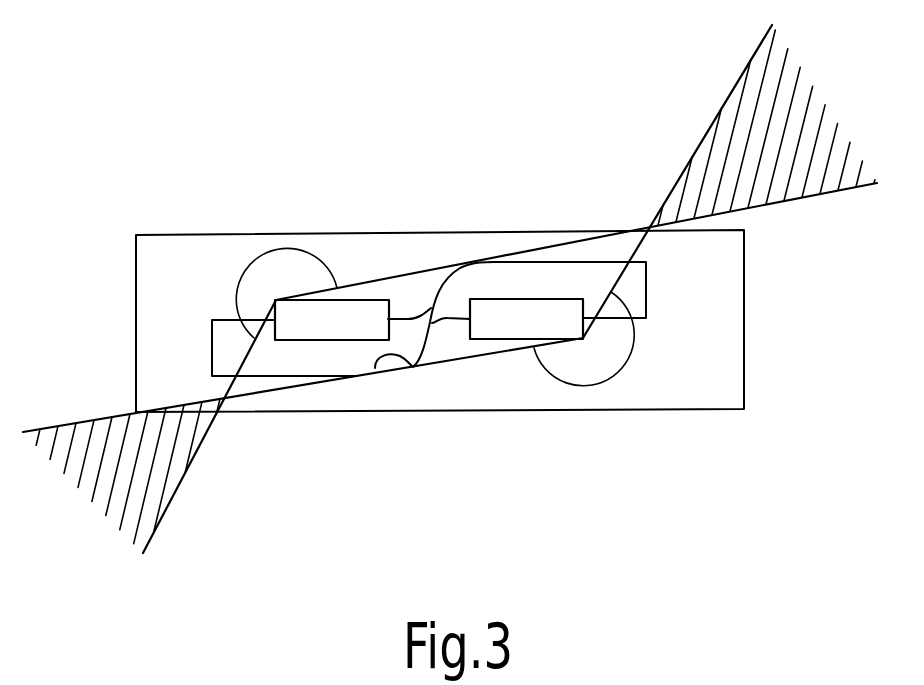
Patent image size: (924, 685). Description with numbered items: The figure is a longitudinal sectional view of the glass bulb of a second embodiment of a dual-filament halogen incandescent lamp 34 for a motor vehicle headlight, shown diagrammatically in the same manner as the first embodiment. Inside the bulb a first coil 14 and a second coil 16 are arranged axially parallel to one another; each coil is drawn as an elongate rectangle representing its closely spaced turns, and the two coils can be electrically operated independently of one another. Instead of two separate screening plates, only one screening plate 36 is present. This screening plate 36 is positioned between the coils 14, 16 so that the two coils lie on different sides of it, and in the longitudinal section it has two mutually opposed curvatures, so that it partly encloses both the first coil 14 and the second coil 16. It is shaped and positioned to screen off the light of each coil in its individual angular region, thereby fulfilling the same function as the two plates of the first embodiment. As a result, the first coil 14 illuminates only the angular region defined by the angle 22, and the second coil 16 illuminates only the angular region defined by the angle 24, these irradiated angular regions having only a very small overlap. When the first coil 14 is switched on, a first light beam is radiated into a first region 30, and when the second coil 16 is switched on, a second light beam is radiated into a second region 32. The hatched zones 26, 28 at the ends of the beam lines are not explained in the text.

The first coil 14 is at (349, 300).
The second coil 16 is at (492, 340).
The angle of first irradiated angular region 22 is at (243, 270).
The angle of second irradiated angular region 24 is at (635, 345).
The first optical fiber 26 is at (130, 480).
The second optical fiber 28 is at (802, 143).
The first region 30 is at (483, 80).
The second region 32 is at (592, 570).
The lamp 34 is at (607, 203).
The screening plate 36 is at (377, 362).